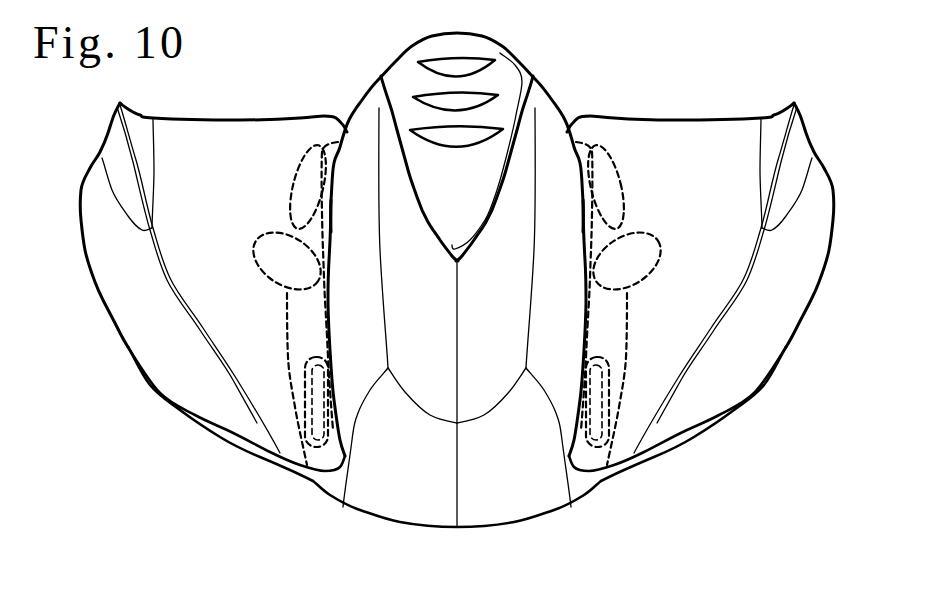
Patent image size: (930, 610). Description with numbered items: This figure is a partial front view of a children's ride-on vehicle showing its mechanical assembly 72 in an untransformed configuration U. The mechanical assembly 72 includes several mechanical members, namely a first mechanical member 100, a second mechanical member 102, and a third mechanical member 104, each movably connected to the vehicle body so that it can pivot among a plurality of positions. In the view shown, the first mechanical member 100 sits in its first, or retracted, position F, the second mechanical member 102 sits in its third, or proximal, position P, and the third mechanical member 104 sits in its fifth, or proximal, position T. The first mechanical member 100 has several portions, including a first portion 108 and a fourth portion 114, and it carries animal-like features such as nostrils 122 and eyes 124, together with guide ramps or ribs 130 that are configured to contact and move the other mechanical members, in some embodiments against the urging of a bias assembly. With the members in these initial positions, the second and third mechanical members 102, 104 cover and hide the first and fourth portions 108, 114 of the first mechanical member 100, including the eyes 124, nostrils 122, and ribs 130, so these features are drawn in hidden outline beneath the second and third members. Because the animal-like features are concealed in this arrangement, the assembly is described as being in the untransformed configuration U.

The mechanical assembly 72 is at (692, 104).
The first mechanical member 100 is at (418, 500).
The second mechanical member 102 is at (148, 338).
The third mechanical member 104 is at (740, 375).
The first portion 108 is at (294, 356).
The fourth portion 114 is at (611, 348).
The nostrils 122 is at (331, 418).
The eyes 124 is at (293, 177).
The guide ramps or ribs 130 is at (268, 248).
The untransformed configuration U is at (107, 273).
The fifth (or proximal) position T is at (790, 298).
The third (or proximal) position P is at (202, 393).
The first (or retracted) position F is at (517, 500).